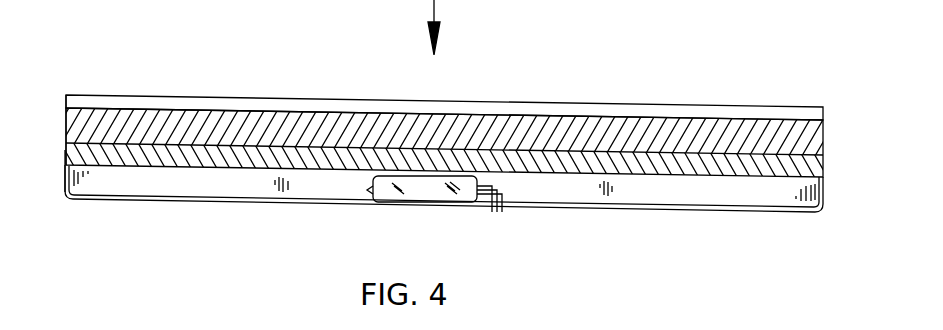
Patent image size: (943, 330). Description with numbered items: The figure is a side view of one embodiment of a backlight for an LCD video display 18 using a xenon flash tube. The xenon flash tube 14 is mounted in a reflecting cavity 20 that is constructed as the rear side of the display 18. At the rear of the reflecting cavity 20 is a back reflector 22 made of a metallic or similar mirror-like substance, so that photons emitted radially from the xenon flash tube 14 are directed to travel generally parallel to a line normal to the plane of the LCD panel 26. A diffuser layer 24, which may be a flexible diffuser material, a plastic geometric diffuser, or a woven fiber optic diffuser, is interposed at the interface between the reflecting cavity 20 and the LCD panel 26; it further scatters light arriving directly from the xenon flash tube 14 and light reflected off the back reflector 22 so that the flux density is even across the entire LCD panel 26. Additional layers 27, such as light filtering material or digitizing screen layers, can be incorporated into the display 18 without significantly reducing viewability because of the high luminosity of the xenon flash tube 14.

The xenon flash tube 14 is at (423, 200).
The LCD video display 18 is at (827, 125).
The reflecting cavity 20 is at (560, 194).
The back reflector 22 is at (263, 205).
The diffuser layer 24 is at (65, 152).
The LCD panel 26 is at (65, 129).
The additional layers 27 is at (670, 104).